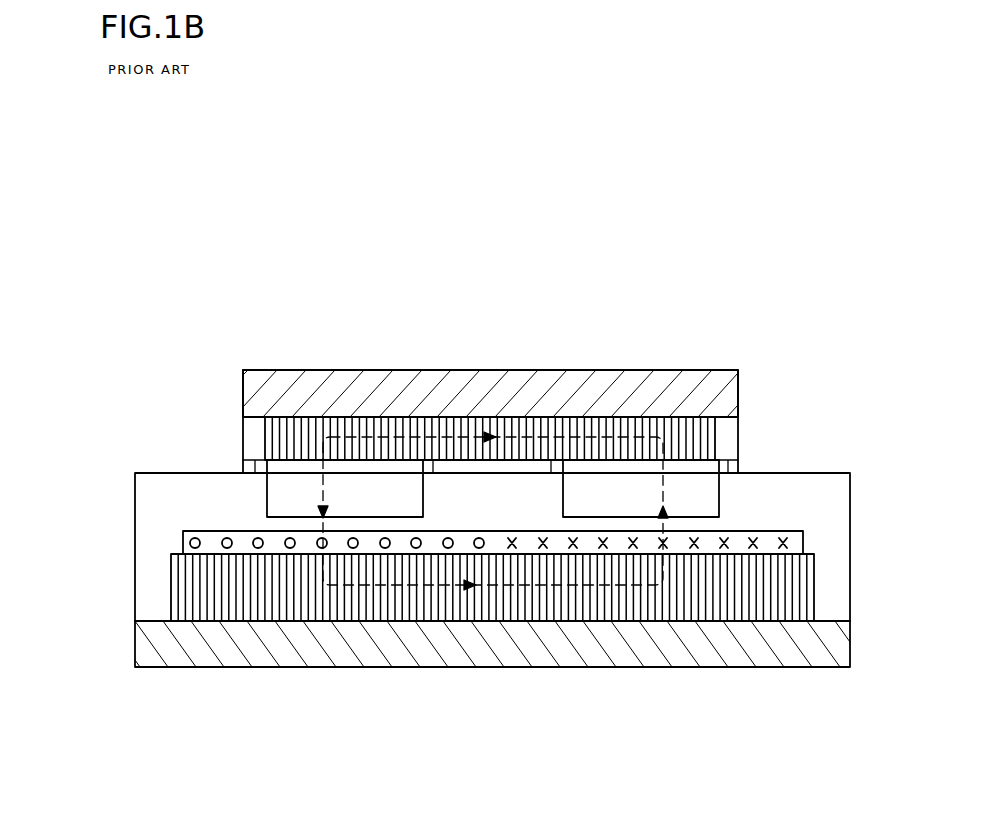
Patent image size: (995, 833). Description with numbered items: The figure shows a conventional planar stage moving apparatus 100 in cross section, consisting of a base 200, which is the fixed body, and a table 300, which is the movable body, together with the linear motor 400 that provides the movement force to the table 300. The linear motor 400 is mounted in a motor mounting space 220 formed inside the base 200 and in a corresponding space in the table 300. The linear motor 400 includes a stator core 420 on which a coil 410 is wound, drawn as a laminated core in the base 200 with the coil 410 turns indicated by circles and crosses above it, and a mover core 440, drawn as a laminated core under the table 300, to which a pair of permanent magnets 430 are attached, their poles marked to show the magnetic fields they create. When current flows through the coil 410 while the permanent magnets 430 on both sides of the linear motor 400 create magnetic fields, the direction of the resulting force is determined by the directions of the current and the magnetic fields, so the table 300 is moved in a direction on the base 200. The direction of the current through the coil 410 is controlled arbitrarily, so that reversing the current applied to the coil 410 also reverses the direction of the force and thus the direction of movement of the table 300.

The stage moving apparatus 100 is at (126, 371).
The base 200 is at (662, 630).
The table 300 is at (498, 395).
The linear motor 400 is at (732, 500).
The coil 410 is at (405, 578).
The stator core 420 is at (232, 590).
The permanent magnets 430 is at (275, 493).
The mover core 440 is at (318, 438).
The motor mounting space 220 is at (527, 508).